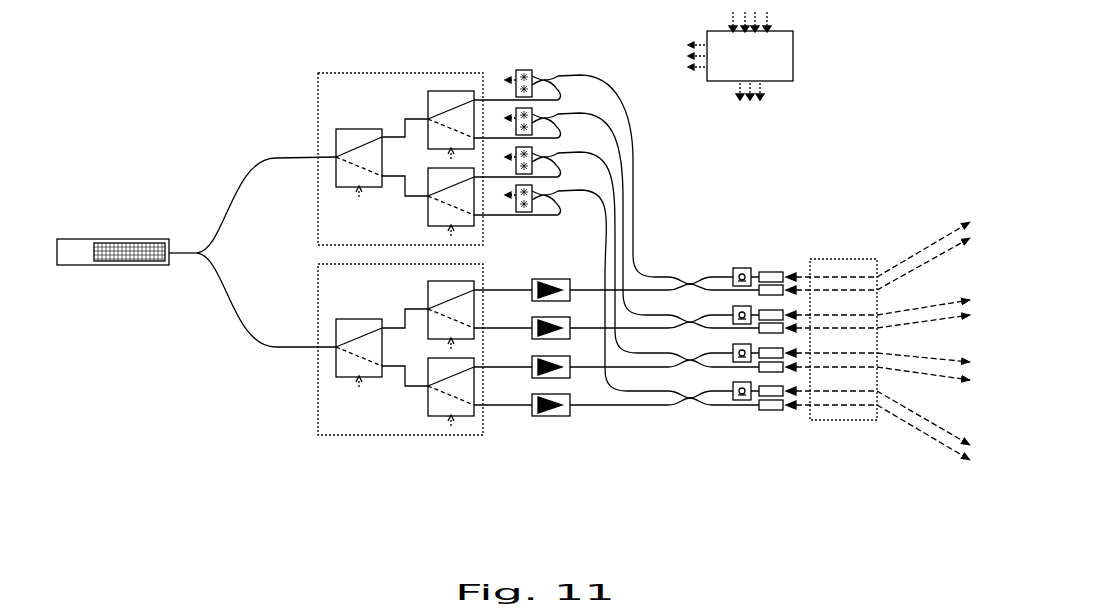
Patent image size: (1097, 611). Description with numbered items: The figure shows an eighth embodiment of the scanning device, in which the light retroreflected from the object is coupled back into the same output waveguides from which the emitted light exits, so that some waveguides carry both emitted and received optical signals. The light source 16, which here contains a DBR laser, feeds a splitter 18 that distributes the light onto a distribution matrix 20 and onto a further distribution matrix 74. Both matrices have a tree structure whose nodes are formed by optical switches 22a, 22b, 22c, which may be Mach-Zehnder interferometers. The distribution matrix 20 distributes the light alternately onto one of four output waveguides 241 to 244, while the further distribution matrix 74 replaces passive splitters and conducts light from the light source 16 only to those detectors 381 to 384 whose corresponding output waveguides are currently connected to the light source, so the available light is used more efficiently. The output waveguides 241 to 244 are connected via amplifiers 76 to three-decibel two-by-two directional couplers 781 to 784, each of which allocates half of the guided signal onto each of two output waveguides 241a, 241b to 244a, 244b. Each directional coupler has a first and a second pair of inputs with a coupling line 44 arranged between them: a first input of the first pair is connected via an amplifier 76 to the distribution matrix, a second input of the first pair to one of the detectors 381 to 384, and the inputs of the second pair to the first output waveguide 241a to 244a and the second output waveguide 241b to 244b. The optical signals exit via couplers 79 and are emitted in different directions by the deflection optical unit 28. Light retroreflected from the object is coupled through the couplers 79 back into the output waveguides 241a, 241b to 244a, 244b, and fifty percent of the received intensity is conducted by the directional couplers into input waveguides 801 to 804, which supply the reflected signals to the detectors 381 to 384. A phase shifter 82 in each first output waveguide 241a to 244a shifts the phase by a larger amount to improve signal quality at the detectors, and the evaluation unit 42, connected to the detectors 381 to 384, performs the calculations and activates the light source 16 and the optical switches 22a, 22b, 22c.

The light source 16 is at (87, 238).
The splitter 18 is at (201, 236).
The distribution matrix 20 is at (318, 298).
The optical switch 22a is at (353, 128).
The optical switch 22b is at (450, 91).
The optical switch 22c is at (428, 212).
The deflection optical unit 28 is at (840, 421).
The evaluation unit 42 is at (793, 62).
The coupling line 44 is at (664, 446).
The further distribution matrix 74 is at (427, 125).
The amplifier 76 is at (560, 280).
The coupler 79 is at (771, 271).
The phase shifter 82 is at (742, 267).
The output waveguide 241 is at (497, 412).
The first output waveguide 241a is at (720, 390).
The second output waveguide 241b is at (718, 405).
The output waveguide 244 is at (488, 286).
The first output waveguide 244a is at (724, 275).
The second output waveguide 244b is at (722, 297).
The detector 381 is at (521, 214).
The detector 384 is at (521, 69).
The directional coupler 781 is at (690, 420).
The directional coupler 784 is at (680, 251).
The input waveguide 801 is at (590, 207).
The input waveguide 804 is at (642, 262).